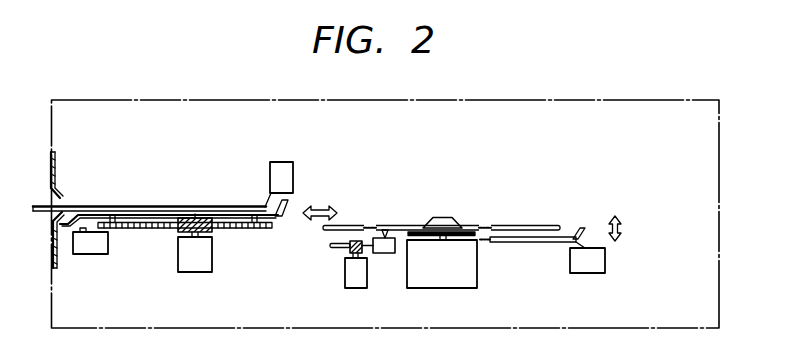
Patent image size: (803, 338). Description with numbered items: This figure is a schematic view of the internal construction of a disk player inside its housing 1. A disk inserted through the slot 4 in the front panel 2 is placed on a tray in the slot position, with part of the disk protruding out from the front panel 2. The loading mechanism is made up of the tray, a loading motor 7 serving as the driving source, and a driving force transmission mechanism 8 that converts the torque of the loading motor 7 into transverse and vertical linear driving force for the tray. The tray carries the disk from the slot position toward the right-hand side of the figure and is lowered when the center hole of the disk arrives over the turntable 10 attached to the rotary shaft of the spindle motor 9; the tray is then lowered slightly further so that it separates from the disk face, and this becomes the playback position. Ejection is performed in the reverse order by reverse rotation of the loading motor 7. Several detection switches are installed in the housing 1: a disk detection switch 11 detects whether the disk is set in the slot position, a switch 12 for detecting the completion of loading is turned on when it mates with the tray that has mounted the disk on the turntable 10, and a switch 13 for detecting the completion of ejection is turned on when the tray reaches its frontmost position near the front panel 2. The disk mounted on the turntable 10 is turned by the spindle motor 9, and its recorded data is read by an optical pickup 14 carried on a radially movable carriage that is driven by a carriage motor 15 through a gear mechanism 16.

The housing 1 is at (595, 100).
The front panel 2 is at (52, 244).
The slot 4 is at (50, 203).
The loading motor 7 is at (205, 273).
The driving force transmission mechanism 8 is at (178, 231).
The spindle motor 9 is at (462, 289).
The turntable 10 is at (447, 217).
The disk detection switch 11 is at (294, 176).
The switch for detecting the completion of loading 12 is at (588, 275).
The switch for detecting the completion of ejection 13 is at (92, 257).
The optical pickup 14 is at (386, 255).
The carriage motor 15 is at (357, 288).
The gear mechanism 16 is at (339, 255).